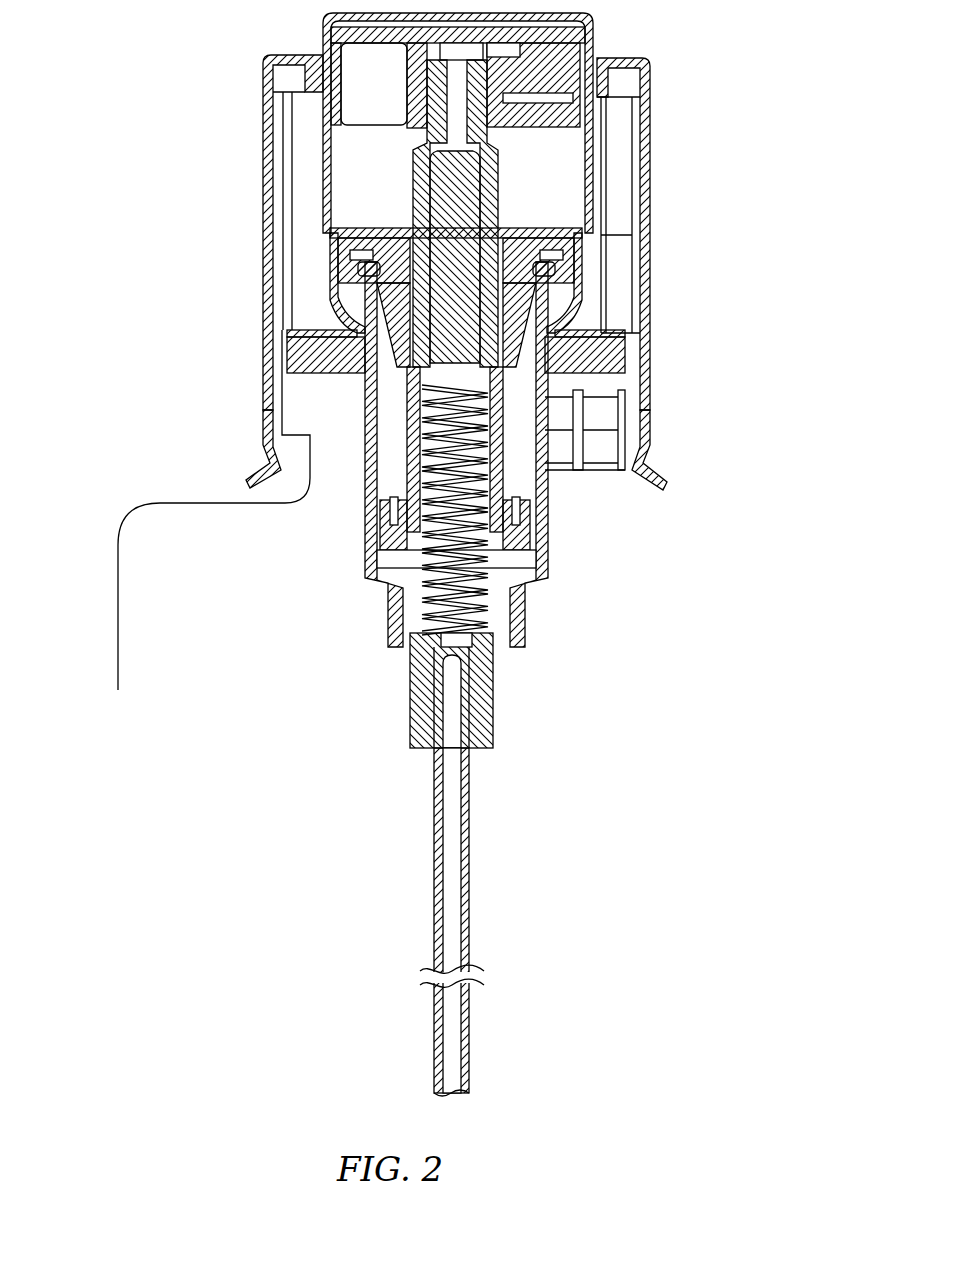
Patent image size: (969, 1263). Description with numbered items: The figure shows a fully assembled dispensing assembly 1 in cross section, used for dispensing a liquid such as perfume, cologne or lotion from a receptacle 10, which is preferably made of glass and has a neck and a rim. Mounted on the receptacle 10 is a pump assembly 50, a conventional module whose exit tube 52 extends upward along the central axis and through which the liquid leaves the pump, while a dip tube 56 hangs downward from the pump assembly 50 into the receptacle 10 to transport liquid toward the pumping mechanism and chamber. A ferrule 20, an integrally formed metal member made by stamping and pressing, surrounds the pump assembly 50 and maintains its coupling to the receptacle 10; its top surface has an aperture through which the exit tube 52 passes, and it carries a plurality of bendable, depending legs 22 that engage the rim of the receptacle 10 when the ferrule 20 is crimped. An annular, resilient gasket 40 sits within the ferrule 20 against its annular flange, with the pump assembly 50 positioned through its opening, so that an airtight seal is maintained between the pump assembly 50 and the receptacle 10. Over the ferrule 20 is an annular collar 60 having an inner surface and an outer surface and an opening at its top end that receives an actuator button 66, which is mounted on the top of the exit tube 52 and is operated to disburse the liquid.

The dispensing assembly 1 is at (712, 196).
The receptacle 10 is at (112, 601).
The ferrule 20 is at (318, 213).
The bendable and depending legs 22 is at (583, 480).
The gasket 40 is at (300, 353).
The pump assembly 50 is at (367, 490).
The exit tube 52 is at (470, 197).
The dip tube 56 is at (428, 942).
The collar 60 is at (263, 113).
The actuator button 66 is at (322, 33).